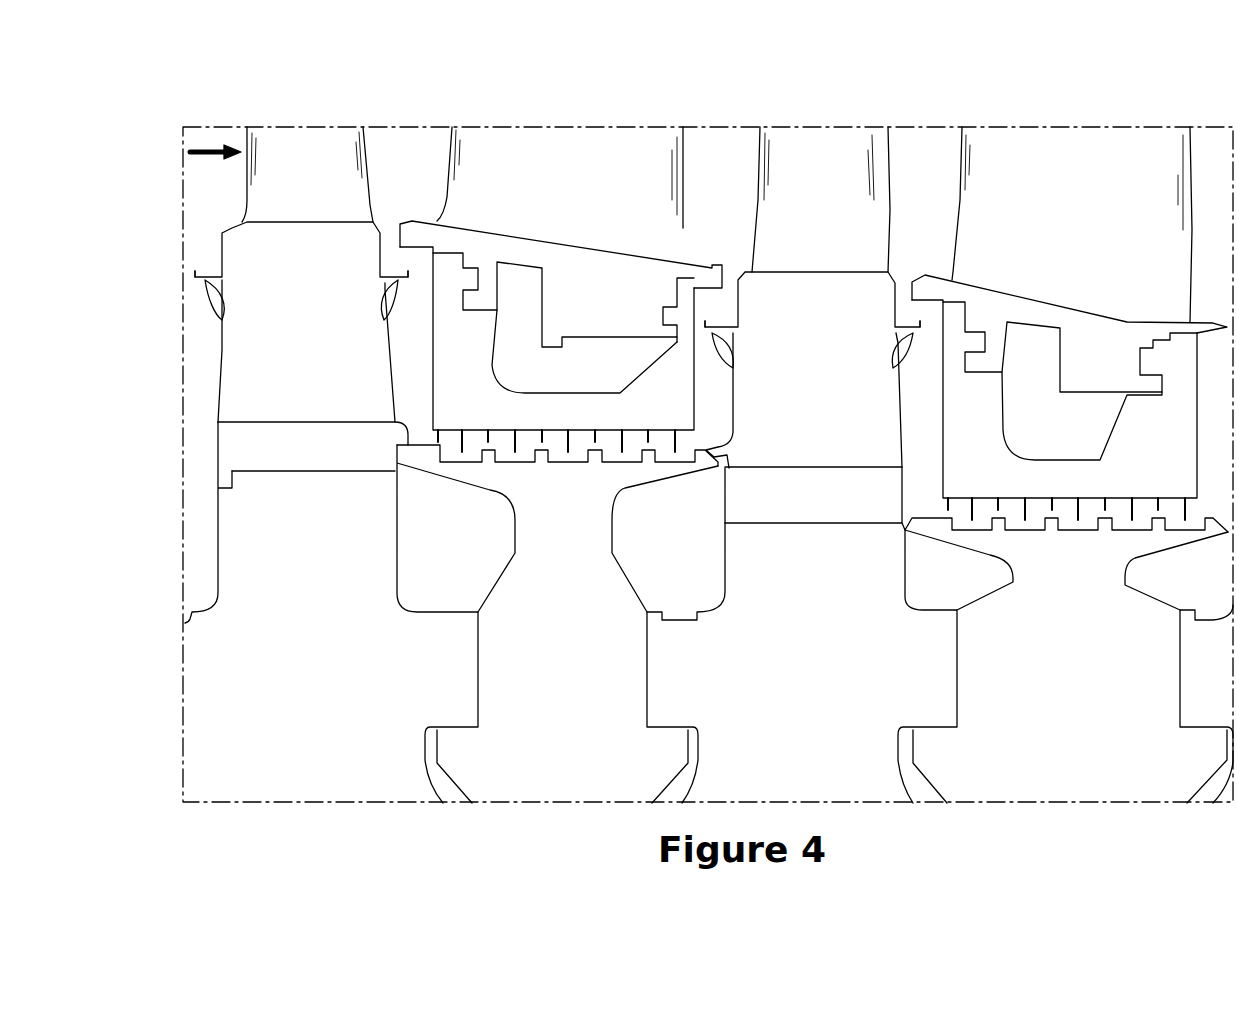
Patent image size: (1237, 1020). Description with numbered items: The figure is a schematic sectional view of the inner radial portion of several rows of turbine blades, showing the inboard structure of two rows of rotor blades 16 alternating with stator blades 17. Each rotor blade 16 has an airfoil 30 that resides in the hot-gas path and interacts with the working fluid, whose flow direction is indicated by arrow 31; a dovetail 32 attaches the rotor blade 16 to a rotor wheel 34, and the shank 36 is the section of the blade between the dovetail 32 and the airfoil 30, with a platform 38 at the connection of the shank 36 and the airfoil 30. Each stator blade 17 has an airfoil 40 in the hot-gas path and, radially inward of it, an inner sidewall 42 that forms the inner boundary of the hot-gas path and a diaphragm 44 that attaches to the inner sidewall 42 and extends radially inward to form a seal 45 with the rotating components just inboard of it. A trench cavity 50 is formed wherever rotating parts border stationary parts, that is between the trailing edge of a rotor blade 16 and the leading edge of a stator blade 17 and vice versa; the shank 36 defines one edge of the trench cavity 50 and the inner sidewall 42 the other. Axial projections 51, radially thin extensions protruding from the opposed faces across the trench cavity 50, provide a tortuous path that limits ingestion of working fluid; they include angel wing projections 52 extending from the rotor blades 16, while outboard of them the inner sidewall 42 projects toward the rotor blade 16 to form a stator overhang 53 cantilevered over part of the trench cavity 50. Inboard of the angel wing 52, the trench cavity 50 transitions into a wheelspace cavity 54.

The rotor blade 16 is at (313, 108).
The stator blade 17 is at (559, 108).
The airfoil 30 is at (291, 172).
The arrow 31 is at (204, 150).
The dovetail 32 is at (281, 458).
The rotor wheel 34 is at (274, 560).
The shank 36 is at (285, 311).
The platform 38 is at (282, 221).
The airfoil 40 is at (544, 200).
The inner sidewall 42 is at (565, 244).
The diaphragm 44 is at (464, 411).
The seal 45 is at (550, 448).
The trench cavity 50 is at (388, 240).
The axial projections 51 is at (387, 293).
The angel wing projections 52 is at (387, 283).
The stator overhang 53 is at (413, 233).
The wheelspace cavity 54 is at (418, 405).